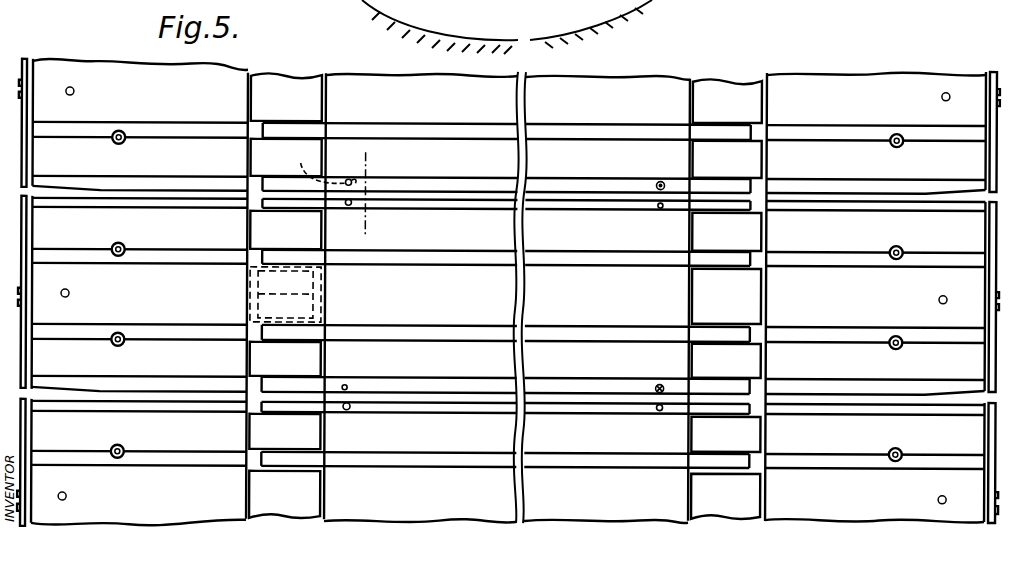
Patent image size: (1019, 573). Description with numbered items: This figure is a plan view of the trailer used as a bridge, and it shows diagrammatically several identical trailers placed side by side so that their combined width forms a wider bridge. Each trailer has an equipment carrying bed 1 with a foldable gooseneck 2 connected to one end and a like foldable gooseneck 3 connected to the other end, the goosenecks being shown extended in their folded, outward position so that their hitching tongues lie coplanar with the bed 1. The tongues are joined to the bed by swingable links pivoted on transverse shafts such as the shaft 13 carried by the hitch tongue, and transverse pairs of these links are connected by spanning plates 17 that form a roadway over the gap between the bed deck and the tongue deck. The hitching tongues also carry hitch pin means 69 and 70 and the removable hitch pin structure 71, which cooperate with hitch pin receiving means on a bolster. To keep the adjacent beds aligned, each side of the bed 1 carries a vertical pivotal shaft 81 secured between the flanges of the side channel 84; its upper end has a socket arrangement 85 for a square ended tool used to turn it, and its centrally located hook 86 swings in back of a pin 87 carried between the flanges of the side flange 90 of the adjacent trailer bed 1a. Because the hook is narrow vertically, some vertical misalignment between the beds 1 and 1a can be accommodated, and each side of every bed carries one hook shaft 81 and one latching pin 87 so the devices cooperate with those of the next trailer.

The adjacent trailer bed 1a is at (475, 112).
The equipment carrying bed 1 is at (470, 310).
The foldable gooseneck 2 is at (203, 307).
The foldable gooseneck 3 is at (836, 310).
The transverse shaft 13 is at (362, 166).
The spanning plate 17 is at (258, 233).
The hitch pin means 69 is at (123, 247).
The hitch pin means 70 is at (121, 336).
The removable hitch pin structure 71 is at (79, 292).
The vertical pivotal shaft 81 is at (347, 206).
The side channel 84 is at (445, 204).
The socket arrangement 85 is at (660, 181).
The hook 86 is at (310, 164).
The pin 87 is at (348, 181).
The side flange 90 is at (437, 186).